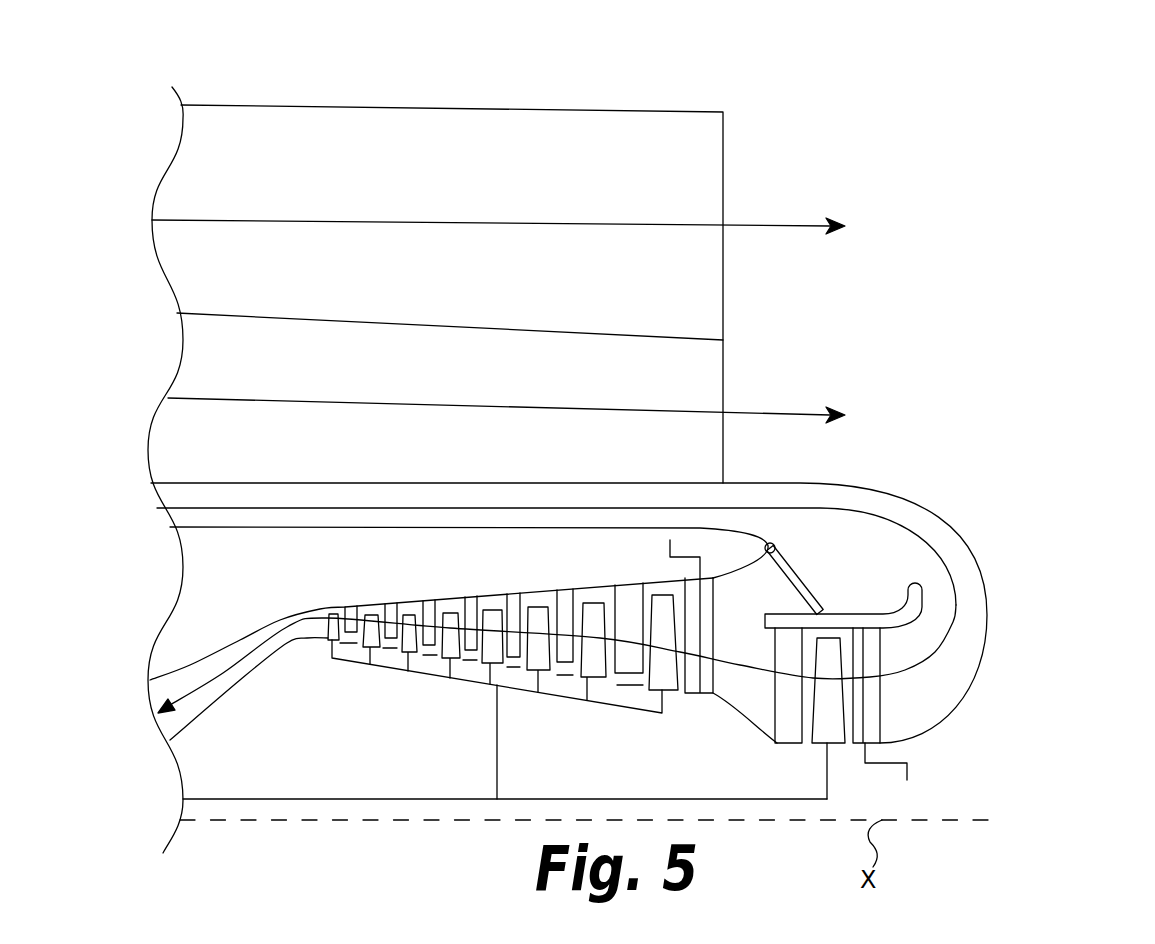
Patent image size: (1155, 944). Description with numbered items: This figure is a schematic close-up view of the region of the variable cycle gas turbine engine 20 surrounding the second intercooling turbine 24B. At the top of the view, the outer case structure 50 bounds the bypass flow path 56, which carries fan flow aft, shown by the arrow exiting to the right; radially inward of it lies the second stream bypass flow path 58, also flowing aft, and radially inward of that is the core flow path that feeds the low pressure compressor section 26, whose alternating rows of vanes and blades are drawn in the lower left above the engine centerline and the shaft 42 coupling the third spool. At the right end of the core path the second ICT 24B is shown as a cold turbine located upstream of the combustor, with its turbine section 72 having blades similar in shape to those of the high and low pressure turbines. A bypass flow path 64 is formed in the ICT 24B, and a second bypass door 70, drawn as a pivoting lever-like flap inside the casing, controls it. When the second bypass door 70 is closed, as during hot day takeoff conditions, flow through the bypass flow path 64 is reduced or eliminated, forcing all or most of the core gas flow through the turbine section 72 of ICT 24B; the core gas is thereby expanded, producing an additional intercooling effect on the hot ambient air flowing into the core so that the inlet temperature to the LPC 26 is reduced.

The gas turbine engine 20 is at (724, 52).
The second intercooling turbine 24B is at (966, 516).
The low pressure compressor section 26 is at (375, 688).
The shaft 42 is at (438, 800).
The outer case structure 50 is at (521, 110).
The bypass flow path 56 is at (590, 176).
The second stream bypass flow path 58 is at (584, 394).
The bypass flow path 64 is at (780, 588).
The second bypass door 70 is at (857, 566).
The turbine section 72 is at (880, 702).